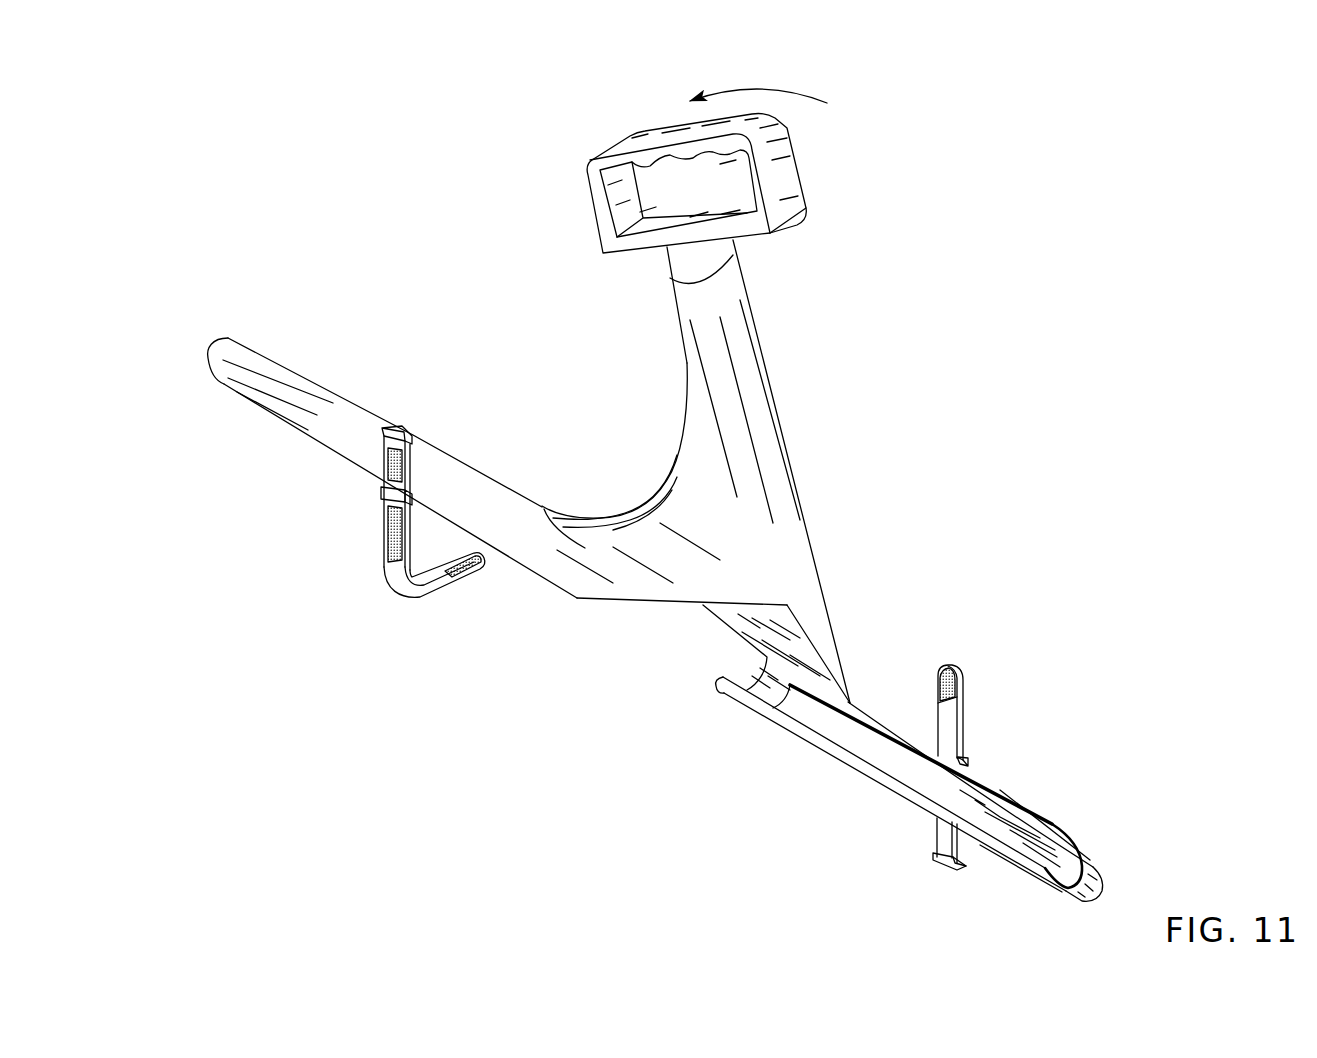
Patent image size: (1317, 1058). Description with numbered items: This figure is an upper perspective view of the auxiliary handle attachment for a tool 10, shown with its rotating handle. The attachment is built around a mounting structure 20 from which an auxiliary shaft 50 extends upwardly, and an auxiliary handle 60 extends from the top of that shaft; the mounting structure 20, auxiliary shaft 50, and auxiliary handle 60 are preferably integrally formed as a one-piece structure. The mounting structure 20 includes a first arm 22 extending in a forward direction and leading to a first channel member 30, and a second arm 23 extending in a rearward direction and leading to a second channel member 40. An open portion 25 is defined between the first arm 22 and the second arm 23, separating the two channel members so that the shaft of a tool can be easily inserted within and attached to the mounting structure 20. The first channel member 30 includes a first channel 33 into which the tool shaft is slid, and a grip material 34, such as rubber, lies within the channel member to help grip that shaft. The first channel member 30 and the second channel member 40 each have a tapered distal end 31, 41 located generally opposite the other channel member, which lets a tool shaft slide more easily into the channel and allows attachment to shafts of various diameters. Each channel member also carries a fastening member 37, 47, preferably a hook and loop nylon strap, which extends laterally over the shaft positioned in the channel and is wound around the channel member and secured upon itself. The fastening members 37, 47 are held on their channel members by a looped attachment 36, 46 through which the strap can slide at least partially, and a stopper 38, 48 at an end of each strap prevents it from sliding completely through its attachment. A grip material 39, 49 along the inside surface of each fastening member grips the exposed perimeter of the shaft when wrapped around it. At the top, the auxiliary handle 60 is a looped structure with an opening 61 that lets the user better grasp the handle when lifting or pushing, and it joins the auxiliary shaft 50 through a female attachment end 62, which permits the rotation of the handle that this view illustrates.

The auxiliary handle attachment for a tool 10 is at (964, 223).
The mounting structure 20 is at (846, 503).
The first arm 22 is at (820, 610).
The second arm 23 is at (539, 506).
The open portion 25 is at (673, 625).
The first channel member 30 is at (818, 792).
The tapered distal end 31 is at (1093, 898).
The first channel 33 is at (1105, 870).
The grip material 34 is at (815, 717).
The looped attachment 36 is at (970, 763).
The fastening member 37 is at (967, 690).
The stopper 38 is at (943, 867).
The grip material 39 is at (945, 723).
The second channel member 40 is at (317, 335).
The tapered distal end 41 is at (210, 342).
The looped attachment 46 is at (382, 495).
The fastening member 47 is at (413, 437).
The stopper 48 is at (383, 542).
The grip material 49 is at (436, 575).
The auxiliary shaft 50 is at (763, 357).
The auxiliary handle 60 is at (628, 123).
The opening 61 is at (593, 217).
The female attachment end 62 is at (670, 253).